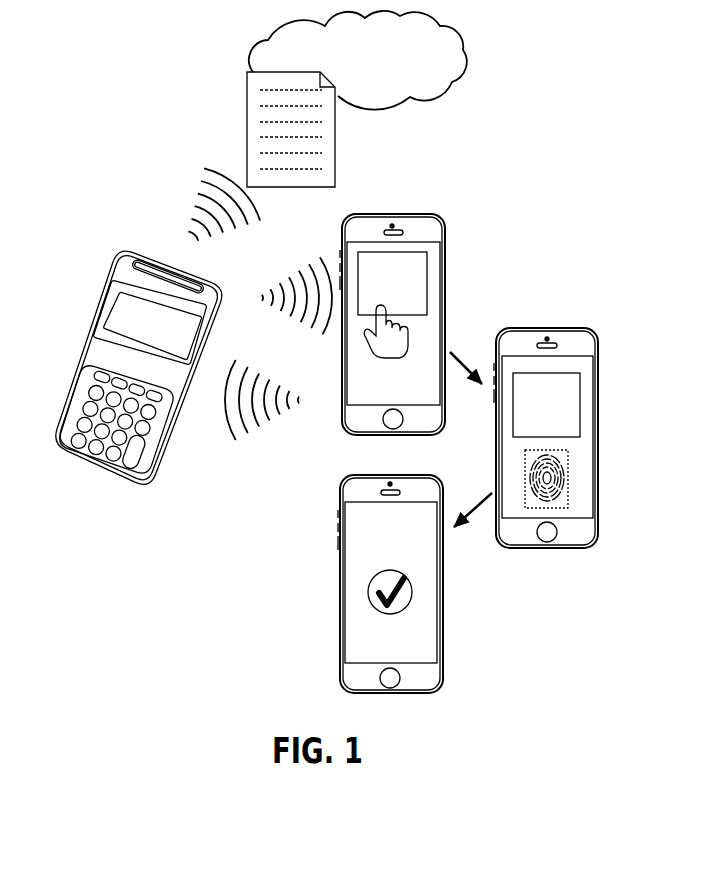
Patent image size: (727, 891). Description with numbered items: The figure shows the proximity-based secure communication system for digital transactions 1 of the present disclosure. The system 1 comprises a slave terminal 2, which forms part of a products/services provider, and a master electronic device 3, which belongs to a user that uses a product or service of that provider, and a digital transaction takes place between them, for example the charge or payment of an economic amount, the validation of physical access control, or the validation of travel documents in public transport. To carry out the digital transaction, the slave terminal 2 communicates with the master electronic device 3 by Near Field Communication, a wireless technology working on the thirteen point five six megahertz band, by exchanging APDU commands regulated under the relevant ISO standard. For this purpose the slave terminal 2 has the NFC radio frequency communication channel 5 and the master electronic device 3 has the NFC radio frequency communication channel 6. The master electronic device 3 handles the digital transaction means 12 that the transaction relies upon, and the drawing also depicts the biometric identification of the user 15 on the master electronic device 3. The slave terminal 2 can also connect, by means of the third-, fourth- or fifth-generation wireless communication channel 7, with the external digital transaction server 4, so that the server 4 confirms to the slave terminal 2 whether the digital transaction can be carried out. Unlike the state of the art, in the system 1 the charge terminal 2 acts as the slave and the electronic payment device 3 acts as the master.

The proximity-based secure communication system for digital transactions 1 is at (542, 165).
The slave terminal 2 is at (122, 276).
The master electronic device 3 is at (449, 445).
The external digital transaction server 4 is at (308, 43).
The NFC radio frequency communication channel of the slave terminal 5 is at (282, 286).
The NFC radio frequency communication channel of the master electronic device 6 is at (258, 418).
The wireless communication channel 7 is at (197, 212).
The digital transaction means 12 is at (415, 280).
The fingerprint authentication area 15 is at (556, 506).